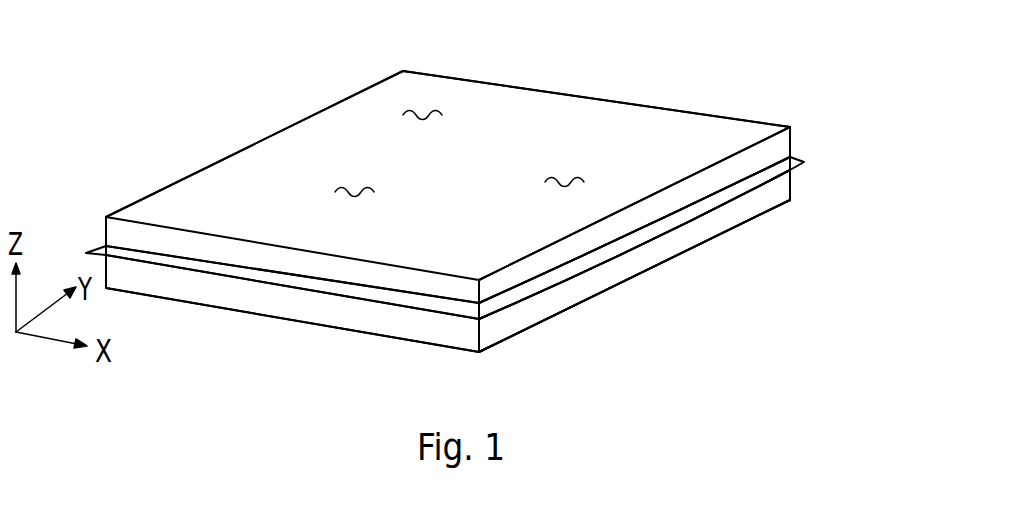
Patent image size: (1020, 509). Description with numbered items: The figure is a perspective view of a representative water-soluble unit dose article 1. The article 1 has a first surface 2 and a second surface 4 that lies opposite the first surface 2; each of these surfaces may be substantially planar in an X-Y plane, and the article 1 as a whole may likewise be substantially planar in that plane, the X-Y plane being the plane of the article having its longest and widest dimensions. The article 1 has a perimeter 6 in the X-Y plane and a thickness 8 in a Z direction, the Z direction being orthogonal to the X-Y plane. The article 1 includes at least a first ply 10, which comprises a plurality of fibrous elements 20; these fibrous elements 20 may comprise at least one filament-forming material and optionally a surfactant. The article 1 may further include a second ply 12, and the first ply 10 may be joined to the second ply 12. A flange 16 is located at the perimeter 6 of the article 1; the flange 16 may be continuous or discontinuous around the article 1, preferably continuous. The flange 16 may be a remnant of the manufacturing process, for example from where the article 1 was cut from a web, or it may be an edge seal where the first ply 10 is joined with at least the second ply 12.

The water-soluble unit dose article 1 is at (243, 150).
The first surface 2 is at (602, 120).
The second surface 4 is at (358, 333).
The perimeter 6 is at (592, 303).
The thickness 8 is at (823, 127).
The first ply 10 is at (773, 148).
The second ply 12 is at (512, 325).
The flange 16 is at (653, 238).
The fibrous elements 20 is at (363, 193).